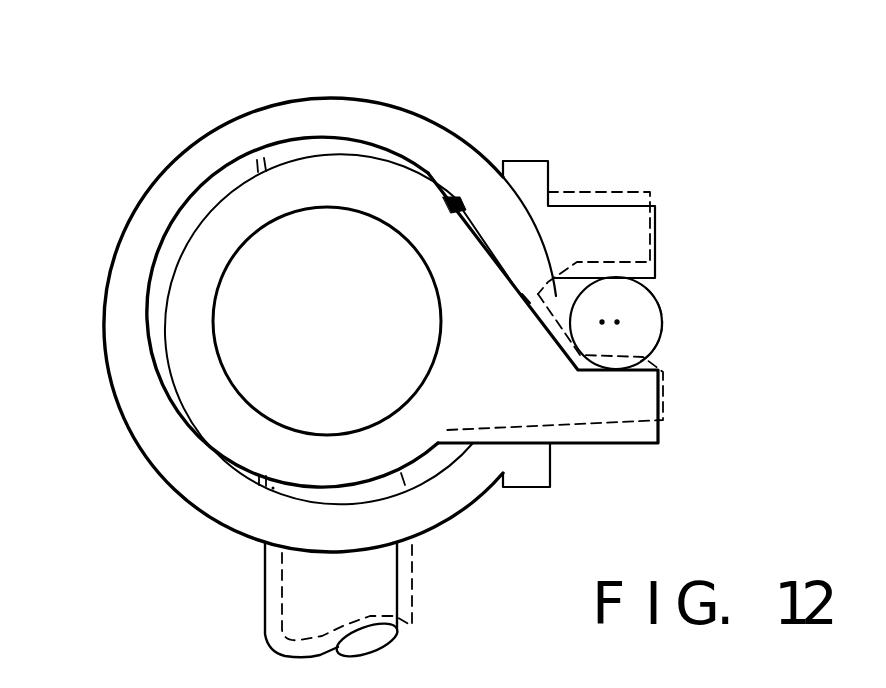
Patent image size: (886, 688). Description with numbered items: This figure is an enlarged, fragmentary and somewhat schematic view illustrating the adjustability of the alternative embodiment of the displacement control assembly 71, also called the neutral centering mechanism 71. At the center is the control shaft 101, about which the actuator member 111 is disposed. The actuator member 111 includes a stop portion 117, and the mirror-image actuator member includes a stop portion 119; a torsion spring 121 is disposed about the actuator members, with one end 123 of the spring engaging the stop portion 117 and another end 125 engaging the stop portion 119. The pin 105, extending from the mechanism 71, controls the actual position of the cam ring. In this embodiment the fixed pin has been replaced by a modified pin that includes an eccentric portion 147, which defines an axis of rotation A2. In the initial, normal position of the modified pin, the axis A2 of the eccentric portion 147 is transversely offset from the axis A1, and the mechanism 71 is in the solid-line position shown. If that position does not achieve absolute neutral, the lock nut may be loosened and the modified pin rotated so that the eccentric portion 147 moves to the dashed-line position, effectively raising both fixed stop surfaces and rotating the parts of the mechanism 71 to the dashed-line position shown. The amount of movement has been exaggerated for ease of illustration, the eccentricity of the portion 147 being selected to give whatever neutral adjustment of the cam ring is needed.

The displacement control assembly 71 is at (414, 98).
The control shaft 101 is at (327, 321).
The pin 105 is at (272, 598).
The actuator member 111 is at (212, 243).
The stop portion 117 is at (608, 437).
The stop portion 119 is at (595, 218).
The torsion spring 121 is at (212, 160).
The spring end 123 is at (528, 470).
The spring end 125 is at (523, 178).
The eccentric portion 147 is at (665, 345).
The axis A1 is at (602, 322).
The axis of rotation A2 is at (617, 322).